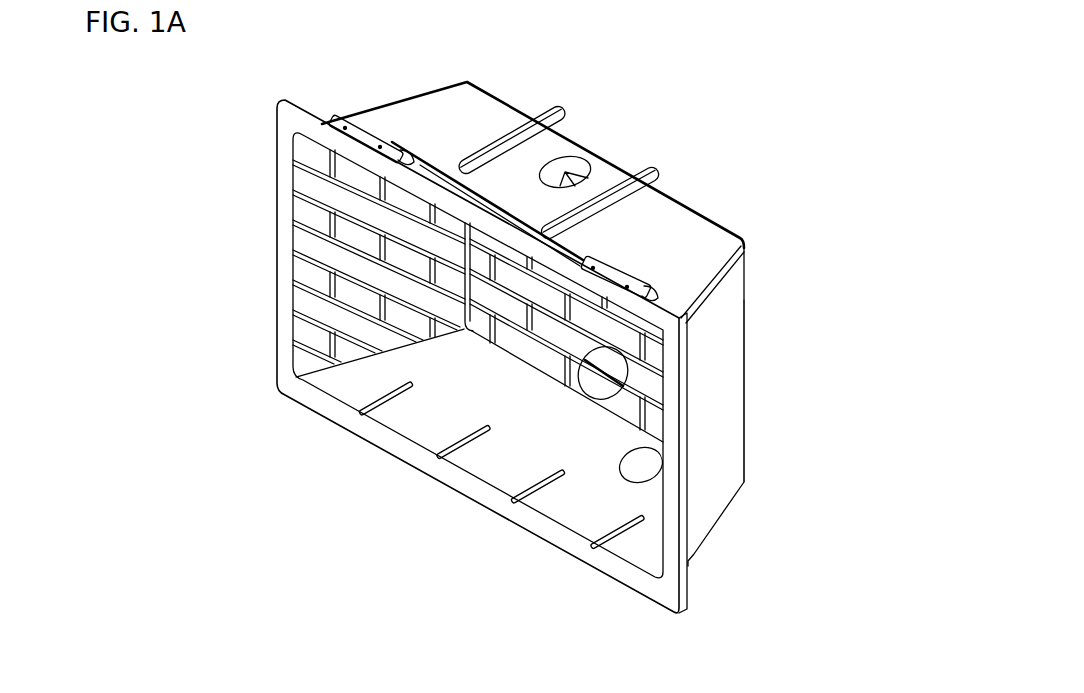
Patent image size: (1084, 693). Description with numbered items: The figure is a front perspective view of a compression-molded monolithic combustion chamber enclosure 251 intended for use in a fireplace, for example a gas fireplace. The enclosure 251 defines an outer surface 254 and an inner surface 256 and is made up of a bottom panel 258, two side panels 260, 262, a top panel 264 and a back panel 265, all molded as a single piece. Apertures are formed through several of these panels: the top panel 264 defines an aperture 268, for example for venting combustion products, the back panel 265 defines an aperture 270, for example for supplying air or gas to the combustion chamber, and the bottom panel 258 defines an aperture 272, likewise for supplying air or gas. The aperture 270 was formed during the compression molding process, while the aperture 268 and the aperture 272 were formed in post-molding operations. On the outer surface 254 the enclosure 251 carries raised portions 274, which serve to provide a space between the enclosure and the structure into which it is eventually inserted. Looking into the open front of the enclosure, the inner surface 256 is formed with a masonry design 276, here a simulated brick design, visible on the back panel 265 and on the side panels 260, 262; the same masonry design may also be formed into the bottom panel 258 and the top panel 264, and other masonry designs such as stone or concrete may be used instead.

The combustion chamber enclosure 251 is at (742, 205).
The outer surface 254 is at (730, 405).
The inner surface 256 is at (310, 328).
The bottom panel 258 is at (490, 458).
The side panel 260 is at (720, 349).
The side panel 262 is at (276, 270).
The top panel 264 is at (423, 118).
The back panel 265 is at (501, 304).
The aperture 268 is at (569, 169).
The aperture 270 is at (610, 365).
The aperture 272 is at (645, 463).
The raised portions 274 is at (665, 165).
The masonry design 276 is at (308, 267).